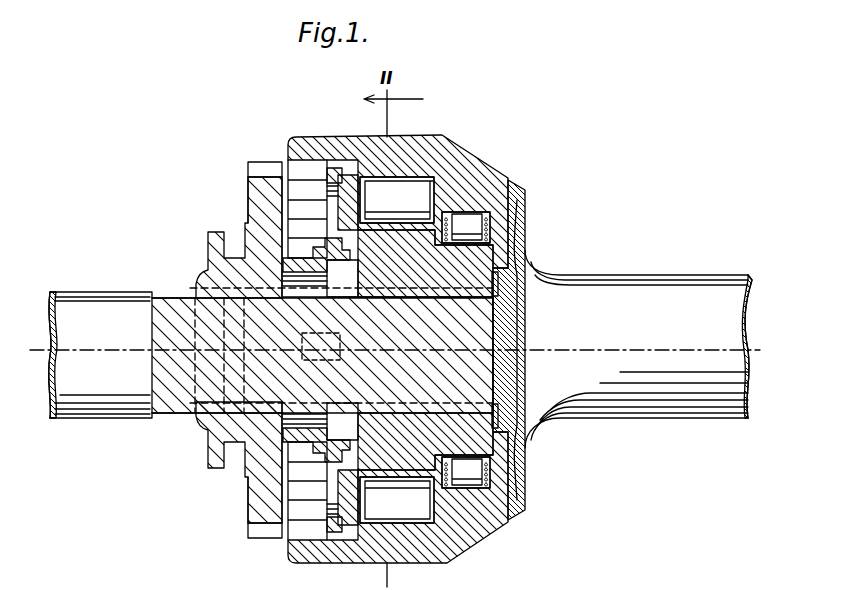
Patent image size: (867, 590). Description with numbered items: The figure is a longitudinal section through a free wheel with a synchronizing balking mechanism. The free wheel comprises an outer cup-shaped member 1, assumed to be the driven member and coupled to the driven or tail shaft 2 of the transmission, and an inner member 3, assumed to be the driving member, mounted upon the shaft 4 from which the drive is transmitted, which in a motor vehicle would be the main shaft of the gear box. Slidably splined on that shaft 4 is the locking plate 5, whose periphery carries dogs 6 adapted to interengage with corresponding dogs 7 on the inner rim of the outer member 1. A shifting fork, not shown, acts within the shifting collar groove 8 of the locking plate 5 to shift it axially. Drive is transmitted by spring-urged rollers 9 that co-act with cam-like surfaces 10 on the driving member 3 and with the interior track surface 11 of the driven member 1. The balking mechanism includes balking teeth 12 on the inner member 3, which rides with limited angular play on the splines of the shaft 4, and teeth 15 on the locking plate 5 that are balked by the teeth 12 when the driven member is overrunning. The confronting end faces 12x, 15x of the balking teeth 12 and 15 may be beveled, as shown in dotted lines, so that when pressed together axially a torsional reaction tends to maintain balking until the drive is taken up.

The outer cup-shaped member 1 is at (432, 150).
The driven or tail shaft 2 is at (680, 396).
The inner member 3 is at (490, 259).
The shaft 4 is at (97, 308).
The locking plate 5 is at (257, 192).
The dogs 6 is at (262, 162).
The dogs 7 is at (302, 168).
The shifting collar groove 8 is at (232, 456).
The spring-urged rollers 9 is at (418, 197).
The cam-like surfaces 10 is at (408, 483).
The interior track surface 11 is at (400, 182).
The balking teeth 12 is at (342, 447).
The end face of balking tooth 12x is at (342, 421).
The teeth 15 is at (323, 251).
The end face of locking plate tooth 15x is at (312, 338).